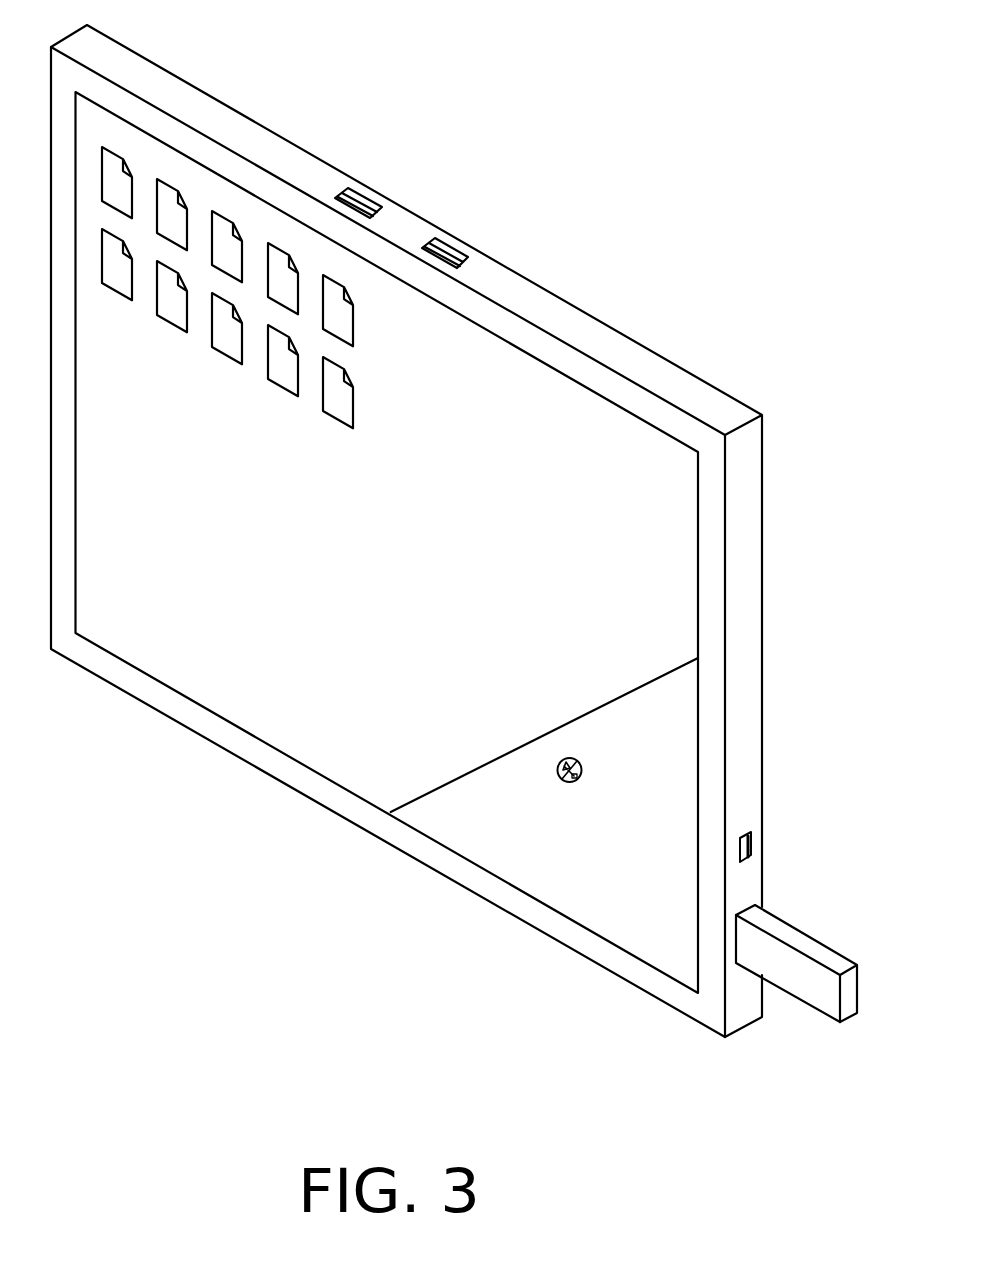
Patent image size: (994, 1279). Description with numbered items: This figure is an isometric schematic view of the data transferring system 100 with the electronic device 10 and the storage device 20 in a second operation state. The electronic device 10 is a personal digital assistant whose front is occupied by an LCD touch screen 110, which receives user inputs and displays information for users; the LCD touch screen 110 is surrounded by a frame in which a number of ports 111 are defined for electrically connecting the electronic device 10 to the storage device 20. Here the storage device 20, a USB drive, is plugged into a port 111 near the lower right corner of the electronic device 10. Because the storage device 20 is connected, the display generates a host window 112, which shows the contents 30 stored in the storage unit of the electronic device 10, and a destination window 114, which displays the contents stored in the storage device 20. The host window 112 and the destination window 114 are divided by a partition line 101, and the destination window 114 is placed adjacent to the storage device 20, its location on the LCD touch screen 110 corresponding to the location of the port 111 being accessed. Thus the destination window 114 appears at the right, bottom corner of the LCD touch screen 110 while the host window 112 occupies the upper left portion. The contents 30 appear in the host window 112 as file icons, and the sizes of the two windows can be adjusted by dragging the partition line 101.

The data transferring system 100 is at (432, 102).
The electronic device 10 is at (645, 357).
The LCD touch screen 110 is at (862, 493).
The host window 112 is at (653, 547).
The destination window 114 is at (653, 740).
The partition line 101 is at (458, 778).
The contents 30 is at (172, 203).
The ports 111 is at (752, 847).
The storage device 20 is at (813, 985).